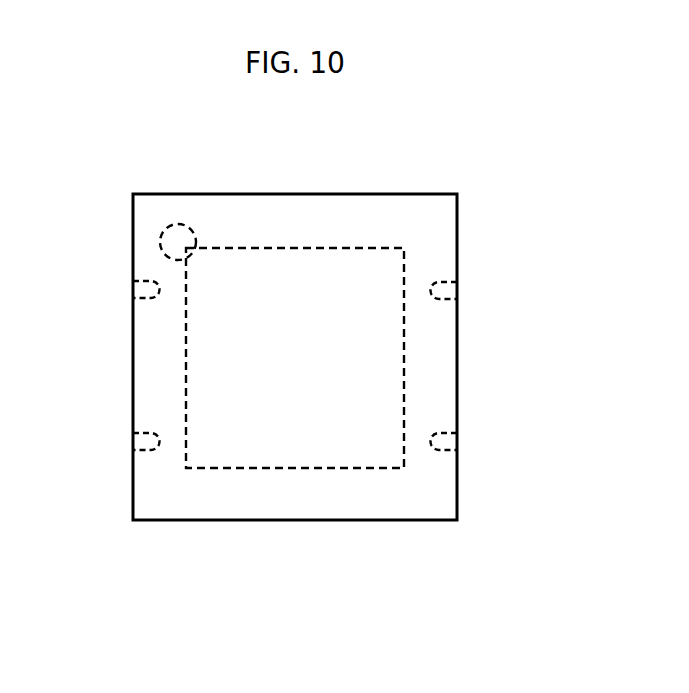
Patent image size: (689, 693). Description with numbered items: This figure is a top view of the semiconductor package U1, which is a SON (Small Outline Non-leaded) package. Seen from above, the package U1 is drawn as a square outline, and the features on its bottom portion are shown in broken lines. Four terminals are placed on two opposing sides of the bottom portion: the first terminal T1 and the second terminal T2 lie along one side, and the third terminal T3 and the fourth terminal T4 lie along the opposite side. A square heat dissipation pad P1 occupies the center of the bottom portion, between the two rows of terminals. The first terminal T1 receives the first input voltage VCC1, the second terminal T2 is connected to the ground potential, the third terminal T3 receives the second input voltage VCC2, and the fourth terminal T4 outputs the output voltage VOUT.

The semiconductor package U1 is at (310, 115).
The heat dissipation pad P1 is at (362, 248).
The first terminal T1 is at (133, 291).
The second terminal T2 is at (133, 443).
The third terminal T3 is at (457, 441).
The fourth terminal T4 is at (457, 286).